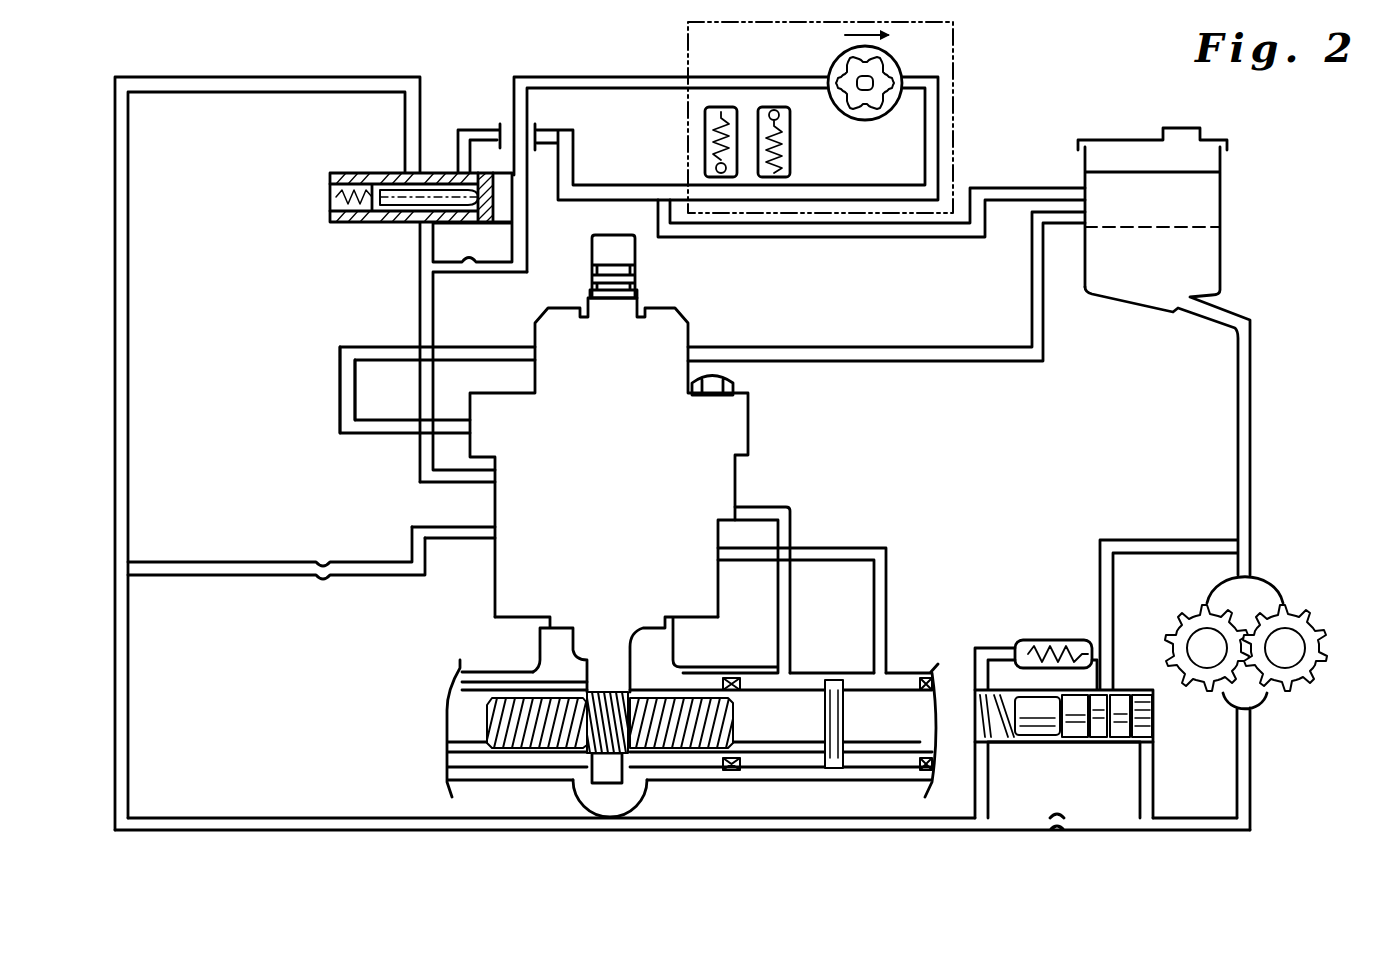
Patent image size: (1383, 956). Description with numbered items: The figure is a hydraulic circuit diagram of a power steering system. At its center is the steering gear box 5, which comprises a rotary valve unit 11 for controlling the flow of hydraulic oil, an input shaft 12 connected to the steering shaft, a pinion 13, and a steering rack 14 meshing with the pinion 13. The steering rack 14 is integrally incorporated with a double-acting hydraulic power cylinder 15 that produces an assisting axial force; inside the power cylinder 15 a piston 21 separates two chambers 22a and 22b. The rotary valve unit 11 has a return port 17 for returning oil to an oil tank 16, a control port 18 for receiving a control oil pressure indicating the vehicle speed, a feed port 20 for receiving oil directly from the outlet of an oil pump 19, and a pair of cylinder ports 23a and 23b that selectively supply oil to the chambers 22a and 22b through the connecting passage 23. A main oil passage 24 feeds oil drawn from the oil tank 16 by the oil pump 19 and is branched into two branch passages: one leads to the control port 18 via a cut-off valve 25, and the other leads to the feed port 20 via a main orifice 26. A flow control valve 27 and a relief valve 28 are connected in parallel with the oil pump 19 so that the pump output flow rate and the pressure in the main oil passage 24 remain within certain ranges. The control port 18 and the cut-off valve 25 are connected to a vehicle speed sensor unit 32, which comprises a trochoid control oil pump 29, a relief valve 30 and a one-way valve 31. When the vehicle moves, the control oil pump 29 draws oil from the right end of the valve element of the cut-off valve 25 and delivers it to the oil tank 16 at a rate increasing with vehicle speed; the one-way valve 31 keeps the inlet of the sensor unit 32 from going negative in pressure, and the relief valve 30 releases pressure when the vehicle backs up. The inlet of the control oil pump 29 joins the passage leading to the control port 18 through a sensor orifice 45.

The steering gear box 5 is at (698, 790).
The rotary valve unit 11 is at (693, 328).
The input shaft 12 is at (632, 265).
The pinion 13 is at (630, 735).
The steering rack 14 is at (508, 753).
The double-acting hydraulic power cylinder 15 is at (900, 665).
The oil tank 16 is at (1212, 262).
The return port 17 is at (468, 424).
The control port 18 is at (490, 482).
The oil pump 19 is at (1305, 604).
The feed port 20 is at (490, 540).
The piston 21 is at (834, 680).
The chamber 22a is at (777, 766).
The chamber 22b is at (882, 764).
The passage 23 is at (802, 610).
The cylinder port 23a is at (738, 510).
The cylinder port 23b is at (723, 558).
The main oil passage 24 is at (305, 818).
The cut-off valve 25 is at (380, 173).
The main orifice 26 is at (323, 560).
The flow control valve 27 is at (1066, 745).
The relief valve 28 is at (1040, 640).
The trochoid control oil pump 29 is at (900, 72).
The relief valve 30 is at (790, 143).
The one-way valve 31 is at (705, 135).
The vehicle speed sensor unit 32 is at (688, 47).
The sensor orifice 45 is at (466, 275).